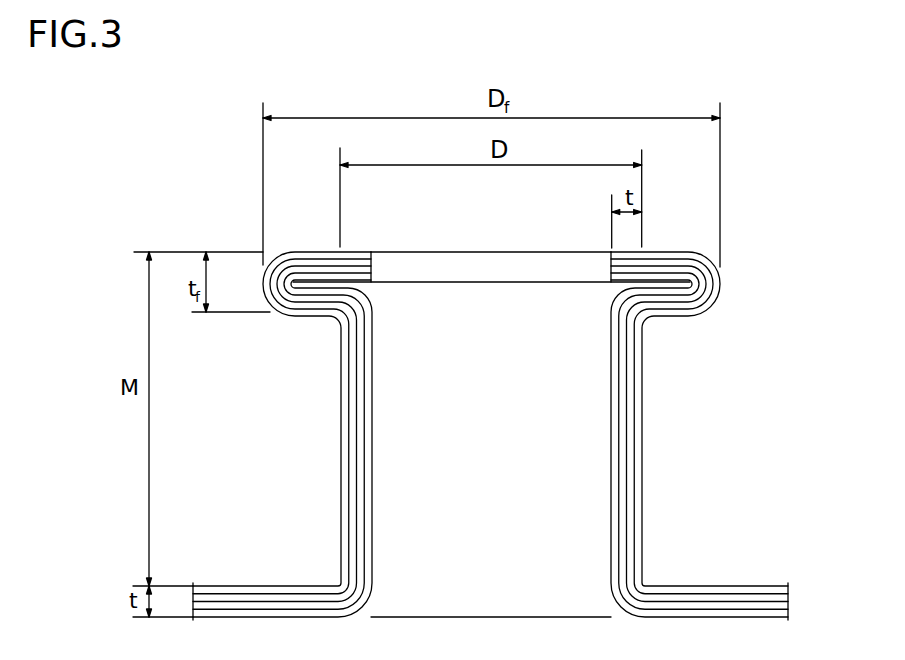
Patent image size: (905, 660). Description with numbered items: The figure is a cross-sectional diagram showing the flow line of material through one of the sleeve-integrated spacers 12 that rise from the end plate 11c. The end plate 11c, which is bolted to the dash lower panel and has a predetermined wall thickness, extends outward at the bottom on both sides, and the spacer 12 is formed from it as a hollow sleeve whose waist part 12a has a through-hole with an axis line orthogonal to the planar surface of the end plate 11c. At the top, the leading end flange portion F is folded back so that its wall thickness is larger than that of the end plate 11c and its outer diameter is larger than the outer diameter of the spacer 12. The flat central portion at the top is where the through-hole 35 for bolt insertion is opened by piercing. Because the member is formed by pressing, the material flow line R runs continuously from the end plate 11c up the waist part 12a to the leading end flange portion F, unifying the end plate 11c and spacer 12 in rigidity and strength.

The spacer 12 is at (316, 243).
The waist part 12a is at (642, 407).
The end plate 11c is at (730, 585).
The through-hole 35 is at (490, 327).
The leading end flange portion F is at (727, 263).
The material flow line R is at (365, 428).